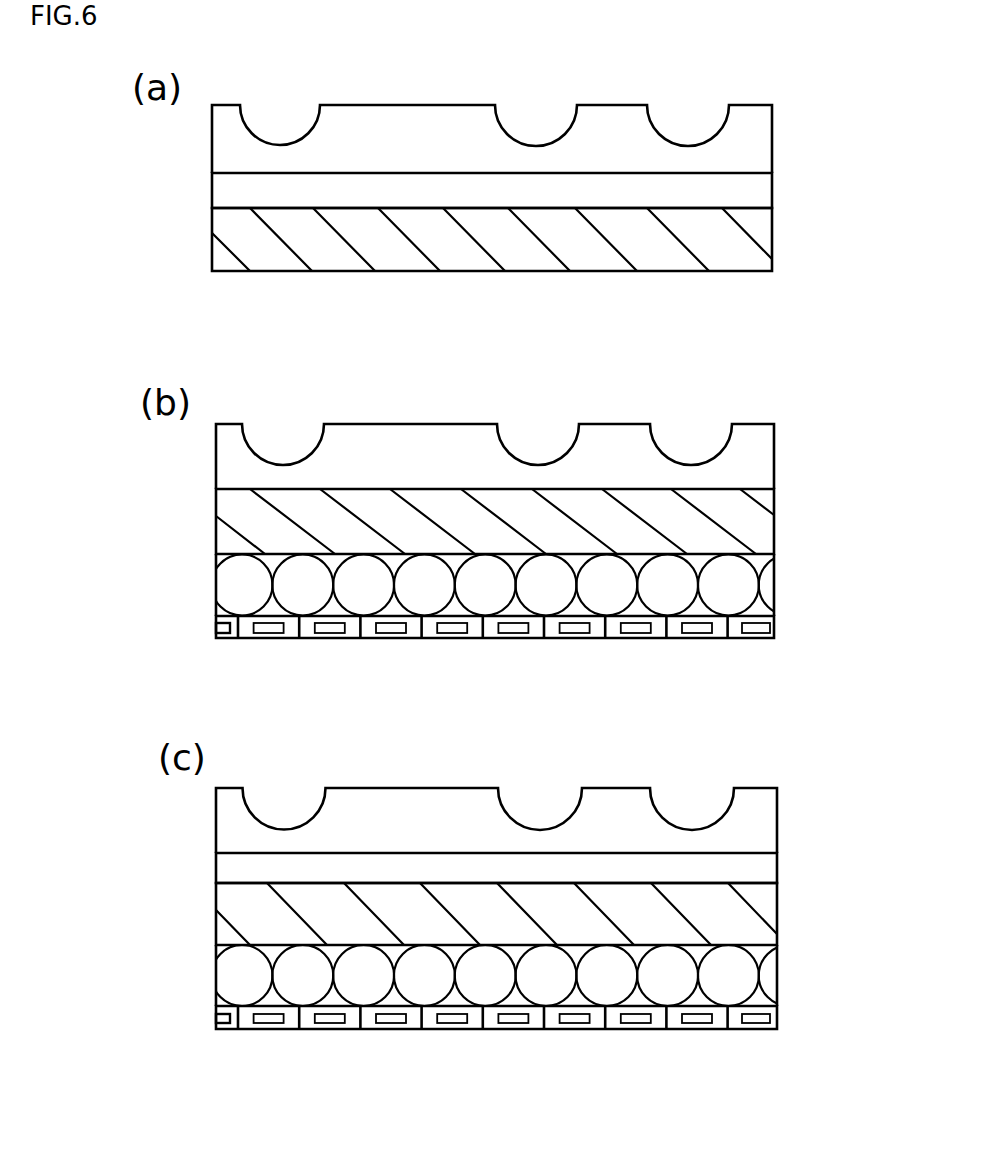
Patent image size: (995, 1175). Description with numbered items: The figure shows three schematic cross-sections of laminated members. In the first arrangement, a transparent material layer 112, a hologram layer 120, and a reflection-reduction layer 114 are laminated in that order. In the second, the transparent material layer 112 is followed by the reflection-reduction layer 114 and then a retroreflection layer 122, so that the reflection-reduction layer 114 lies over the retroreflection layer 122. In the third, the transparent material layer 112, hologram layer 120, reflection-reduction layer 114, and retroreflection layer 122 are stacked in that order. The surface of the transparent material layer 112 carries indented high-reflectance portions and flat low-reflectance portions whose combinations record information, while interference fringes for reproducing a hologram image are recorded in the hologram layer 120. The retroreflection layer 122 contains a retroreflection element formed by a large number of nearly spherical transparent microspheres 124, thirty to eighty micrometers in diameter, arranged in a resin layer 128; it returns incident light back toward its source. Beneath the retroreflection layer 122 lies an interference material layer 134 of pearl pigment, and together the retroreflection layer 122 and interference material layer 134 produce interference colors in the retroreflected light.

The transparent material layer 112 is at (760, 153).
The hologram layer 120 is at (760, 196).
The reflection-reduction layer 114 is at (760, 238).
The retroreflection layer 122 is at (786, 560).
The transparent microspheres 124 is at (232, 588).
The resin layer 128 is at (267, 608).
The interference material layer 134 is at (228, 626).